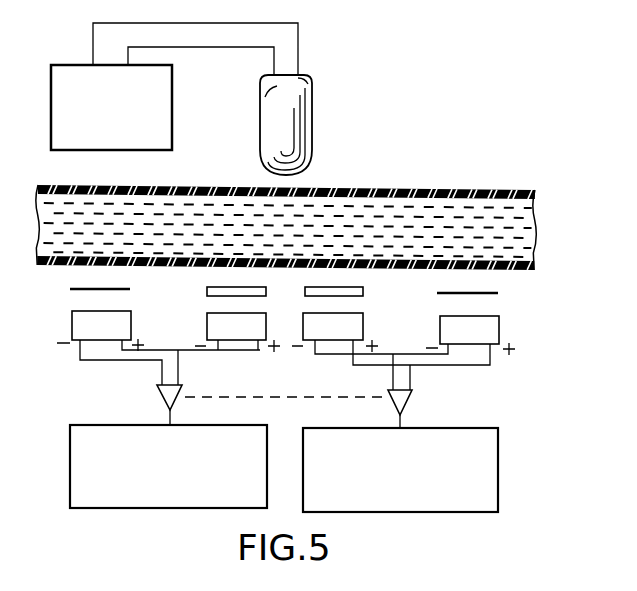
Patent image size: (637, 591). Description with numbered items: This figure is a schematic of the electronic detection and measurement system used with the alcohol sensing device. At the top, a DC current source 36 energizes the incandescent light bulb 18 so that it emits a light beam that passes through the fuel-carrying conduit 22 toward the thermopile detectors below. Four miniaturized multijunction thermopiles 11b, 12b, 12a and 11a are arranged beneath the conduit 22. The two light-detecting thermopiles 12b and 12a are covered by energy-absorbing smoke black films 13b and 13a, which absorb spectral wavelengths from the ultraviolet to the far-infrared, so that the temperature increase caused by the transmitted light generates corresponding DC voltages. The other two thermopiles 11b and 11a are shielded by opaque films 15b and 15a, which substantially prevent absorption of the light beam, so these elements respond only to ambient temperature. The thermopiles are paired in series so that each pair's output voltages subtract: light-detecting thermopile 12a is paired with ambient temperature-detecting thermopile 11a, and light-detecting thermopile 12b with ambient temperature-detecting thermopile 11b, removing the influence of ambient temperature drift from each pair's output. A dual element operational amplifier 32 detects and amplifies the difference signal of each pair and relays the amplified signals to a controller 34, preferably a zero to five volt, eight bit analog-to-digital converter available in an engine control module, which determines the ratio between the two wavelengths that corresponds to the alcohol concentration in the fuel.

The current source 36 is at (52, 90).
The incandescent light bulb 18 is at (305, 132).
The pipe / conduit 22 is at (402, 188).
The opaque film 15b is at (92, 288).
The smoke black film 13b is at (222, 288).
The smoke black film 13a is at (343, 287).
The opaque film 15a is at (477, 293).
The thermopile 11b is at (85, 326).
The thermopile 12b is at (240, 328).
The thermopile 12a is at (337, 332).
The thermopile 11a is at (493, 333).
The dual element operational amplifier 32 is at (160, 398).
The controller 34 is at (72, 432).